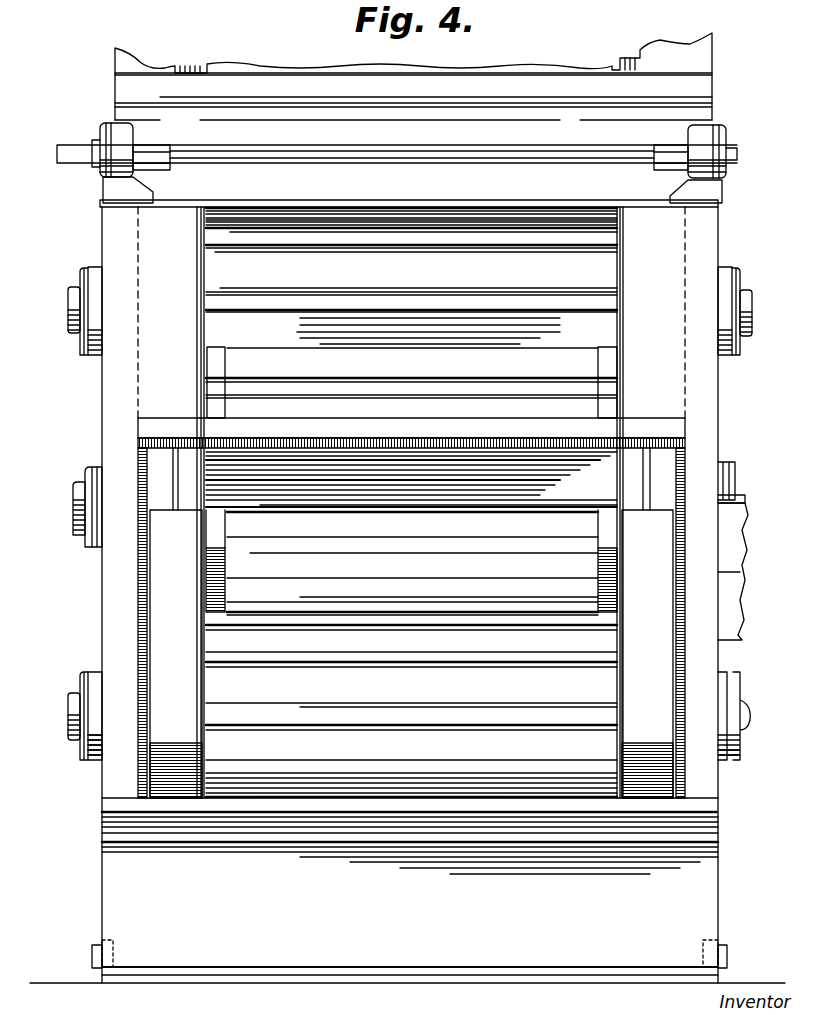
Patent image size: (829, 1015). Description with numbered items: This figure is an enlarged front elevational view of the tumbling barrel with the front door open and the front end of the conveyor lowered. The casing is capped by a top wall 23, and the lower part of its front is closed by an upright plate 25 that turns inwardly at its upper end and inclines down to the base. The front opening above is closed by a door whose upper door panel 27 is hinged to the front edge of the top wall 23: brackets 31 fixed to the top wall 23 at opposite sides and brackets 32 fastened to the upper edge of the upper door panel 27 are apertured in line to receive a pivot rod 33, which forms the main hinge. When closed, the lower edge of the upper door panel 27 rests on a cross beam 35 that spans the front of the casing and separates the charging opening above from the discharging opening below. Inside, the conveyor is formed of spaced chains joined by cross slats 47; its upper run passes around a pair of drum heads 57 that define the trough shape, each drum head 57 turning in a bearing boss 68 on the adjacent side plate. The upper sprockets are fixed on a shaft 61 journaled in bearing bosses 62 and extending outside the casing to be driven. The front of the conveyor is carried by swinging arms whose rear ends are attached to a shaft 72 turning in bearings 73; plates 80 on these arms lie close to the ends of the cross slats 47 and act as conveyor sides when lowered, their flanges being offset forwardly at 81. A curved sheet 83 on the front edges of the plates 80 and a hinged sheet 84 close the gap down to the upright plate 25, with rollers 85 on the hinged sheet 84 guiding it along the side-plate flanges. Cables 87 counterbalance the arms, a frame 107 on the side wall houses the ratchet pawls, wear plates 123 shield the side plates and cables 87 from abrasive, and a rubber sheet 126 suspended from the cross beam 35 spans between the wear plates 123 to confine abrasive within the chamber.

The top wall 23 is at (498, 200).
The upright plate 25 is at (187, 983).
The upper door panel 27 is at (700, 112).
The brackets 31 is at (112, 185).
The brackets 32 is at (160, 170).
The pivot rod 33 is at (223, 150).
The cross beam 35 is at (150, 432).
The cross slats 47 is at (428, 278).
The drum heads 57 is at (216, 363).
The shaft 61 is at (68, 305).
The bearing bosses 62 is at (95, 267).
The bearing boss 68 is at (75, 520).
The shaft 72 is at (750, 718).
The bearings 73 is at (95, 762).
The plates 80 is at (205, 525).
The offset 81 is at (163, 808).
The curved sheet 83 is at (102, 828).
The hinged sheet 84 is at (105, 900).
The rollers 85 is at (100, 943).
The cables 87 is at (173, 491).
The frame 107 is at (742, 542).
The wear plates 123 is at (203, 378).
The rubber sheet 126 is at (443, 485).